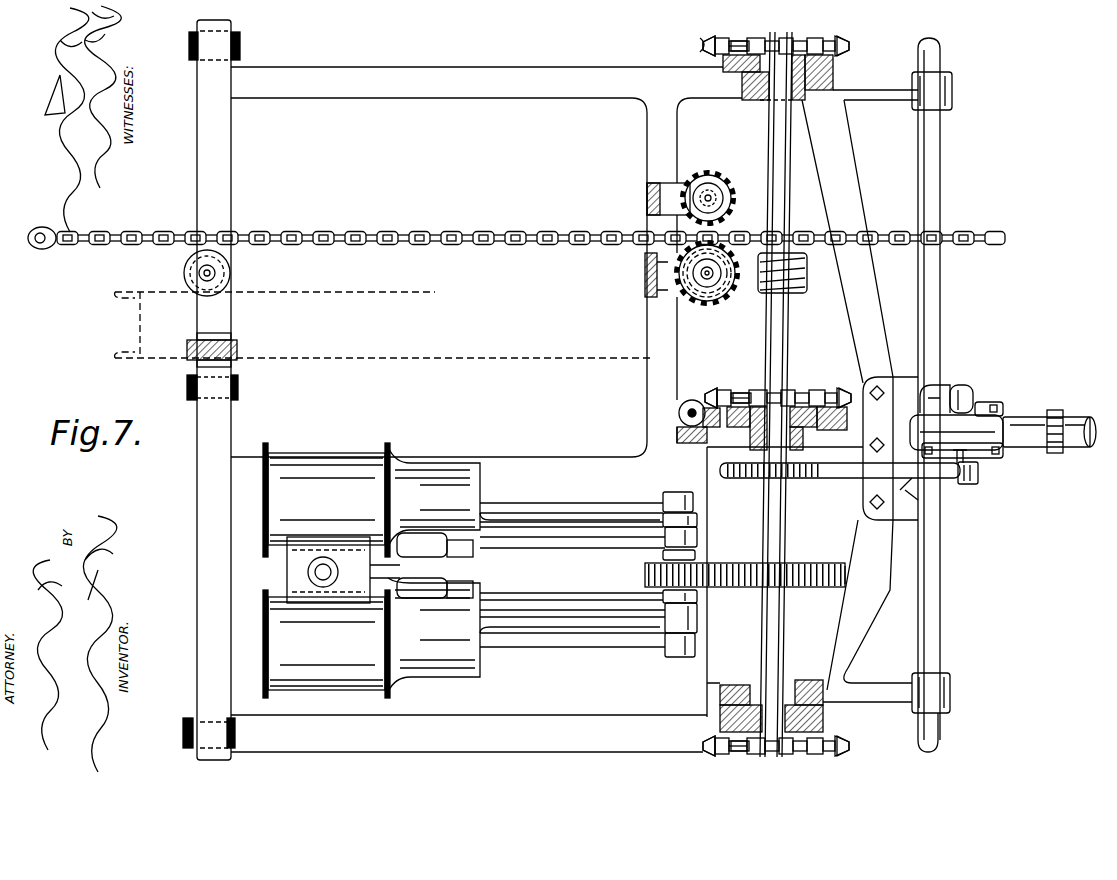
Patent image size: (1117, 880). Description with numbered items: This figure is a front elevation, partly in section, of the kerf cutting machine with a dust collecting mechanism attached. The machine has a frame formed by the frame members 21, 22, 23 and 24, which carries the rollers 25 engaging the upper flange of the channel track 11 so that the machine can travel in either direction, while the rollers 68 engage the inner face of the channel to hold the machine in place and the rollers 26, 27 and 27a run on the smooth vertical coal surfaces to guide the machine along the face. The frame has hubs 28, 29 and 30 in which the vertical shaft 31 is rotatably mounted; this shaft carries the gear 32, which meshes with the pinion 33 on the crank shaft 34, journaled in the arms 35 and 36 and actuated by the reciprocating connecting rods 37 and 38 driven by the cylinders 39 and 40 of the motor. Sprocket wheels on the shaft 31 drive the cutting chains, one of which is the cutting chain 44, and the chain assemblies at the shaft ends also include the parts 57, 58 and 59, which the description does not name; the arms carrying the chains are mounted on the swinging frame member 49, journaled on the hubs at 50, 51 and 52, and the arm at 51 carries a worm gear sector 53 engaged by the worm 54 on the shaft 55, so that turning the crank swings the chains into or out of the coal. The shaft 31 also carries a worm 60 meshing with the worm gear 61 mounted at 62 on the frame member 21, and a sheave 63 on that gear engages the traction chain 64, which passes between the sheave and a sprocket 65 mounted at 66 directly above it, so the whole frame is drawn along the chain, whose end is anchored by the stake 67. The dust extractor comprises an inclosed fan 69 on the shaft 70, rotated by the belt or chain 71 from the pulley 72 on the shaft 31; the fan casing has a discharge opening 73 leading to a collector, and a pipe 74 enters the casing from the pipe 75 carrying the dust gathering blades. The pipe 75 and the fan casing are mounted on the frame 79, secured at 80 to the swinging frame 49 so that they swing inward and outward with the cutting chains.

The track 11 is at (285, 299).
The frame member 21 is at (655, 355).
The frame member 22 is at (500, 70).
The frame member 23 is at (215, 232).
The frame member 24 is at (525, 730).
The rollers 25 is at (233, 280).
The roller 26 is at (240, 43).
The roller 27 is at (240, 376).
The roller 27a is at (236, 735).
The hub 28 is at (723, 72).
The hub 29 is at (800, 438).
The hub 30 is at (794, 690).
The vertical shaft 31 is at (776, 142).
The gear 32 is at (802, 572).
The pinion 33 is at (712, 566).
The crank shaft 34 is at (668, 660).
The arm 35 is at (560, 522).
The arm 36 is at (600, 640).
The connecting rod 37 is at (550, 645).
The connecting rod 38 is at (500, 505).
The cylinder 39 is at (371, 638).
The cylinder 40 is at (371, 500).
The cutting chain 44 is at (714, 38).
The frame member 49 is at (850, 236).
The journal 50 is at (832, 83).
The journal 51 is at (870, 395).
The journal 52 is at (822, 686).
The worm gear sector 53 is at (722, 427).
The worm 54 is at (677, 428).
The shaft 55 is at (680, 413).
The lock nuts 57 is at (788, 40).
The sleeve 58 is at (760, 36).
The chain guide 59 is at (702, 53).
The worm 60 is at (805, 286).
The worm gear 61 is at (685, 305).
The mounting 62 is at (645, 262).
The sheave 63 is at (730, 302).
The traction chain 64 is at (130, 230).
The sprocket 65 is at (722, 180).
The mounting 66 is at (668, 190).
The stake 67 is at (45, 249).
The rollers 68 is at (233, 350).
The fan 69 is at (1000, 432).
The shaft 70 is at (962, 480).
The belt or chain 71 is at (918, 494).
The pulley 72 is at (762, 477).
The discharge opening 73 is at (1068, 420).
The pipe 74 is at (958, 403).
The pipe 75 is at (940, 240).
The frame 79 is at (908, 495).
The securing point 80 is at (884, 444).